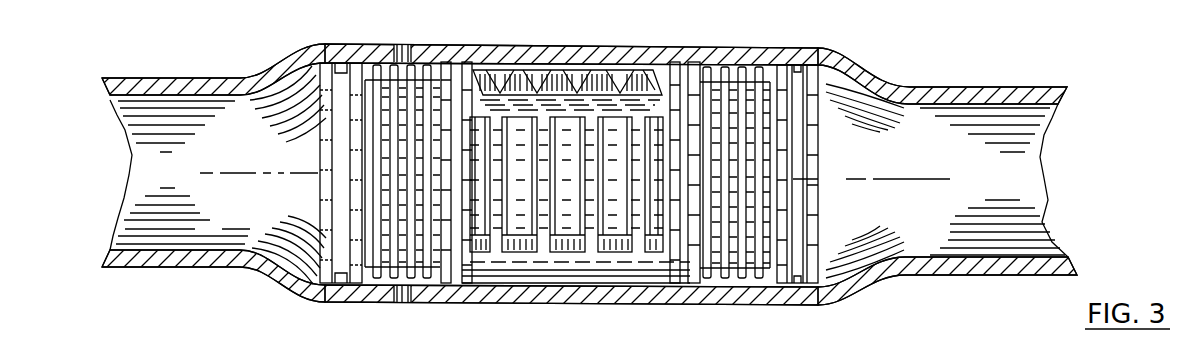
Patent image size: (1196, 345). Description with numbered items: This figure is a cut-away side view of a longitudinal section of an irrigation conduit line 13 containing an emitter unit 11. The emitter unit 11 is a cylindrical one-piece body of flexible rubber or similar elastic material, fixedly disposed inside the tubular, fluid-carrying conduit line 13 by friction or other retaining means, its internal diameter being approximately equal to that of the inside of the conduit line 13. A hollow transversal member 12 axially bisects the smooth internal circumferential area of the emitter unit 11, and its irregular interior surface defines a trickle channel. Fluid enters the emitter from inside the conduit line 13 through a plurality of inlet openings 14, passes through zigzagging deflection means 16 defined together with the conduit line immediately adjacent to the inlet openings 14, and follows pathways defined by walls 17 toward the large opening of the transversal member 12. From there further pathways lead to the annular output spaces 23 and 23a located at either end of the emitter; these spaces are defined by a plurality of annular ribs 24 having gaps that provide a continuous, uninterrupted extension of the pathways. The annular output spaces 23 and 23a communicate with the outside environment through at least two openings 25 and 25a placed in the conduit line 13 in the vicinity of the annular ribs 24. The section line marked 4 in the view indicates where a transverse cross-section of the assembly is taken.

The section line 4- 4 is at (211, 180).
The emitter unit 11 is at (302, 130).
The transversal member 12 is at (589, 196).
The conduit line 13 is at (185, 86).
The inlet openings 14 is at (650, 65).
The zigzagging deflection means 16 is at (500, 60).
The walls 17 is at (545, 58).
The annular output space 23 is at (698, 343).
The annular output space 23a is at (418, 68).
The annular ribs 24 is at (428, 68).
The opening 25 is at (402, 48).
The opening 25a is at (404, 300).